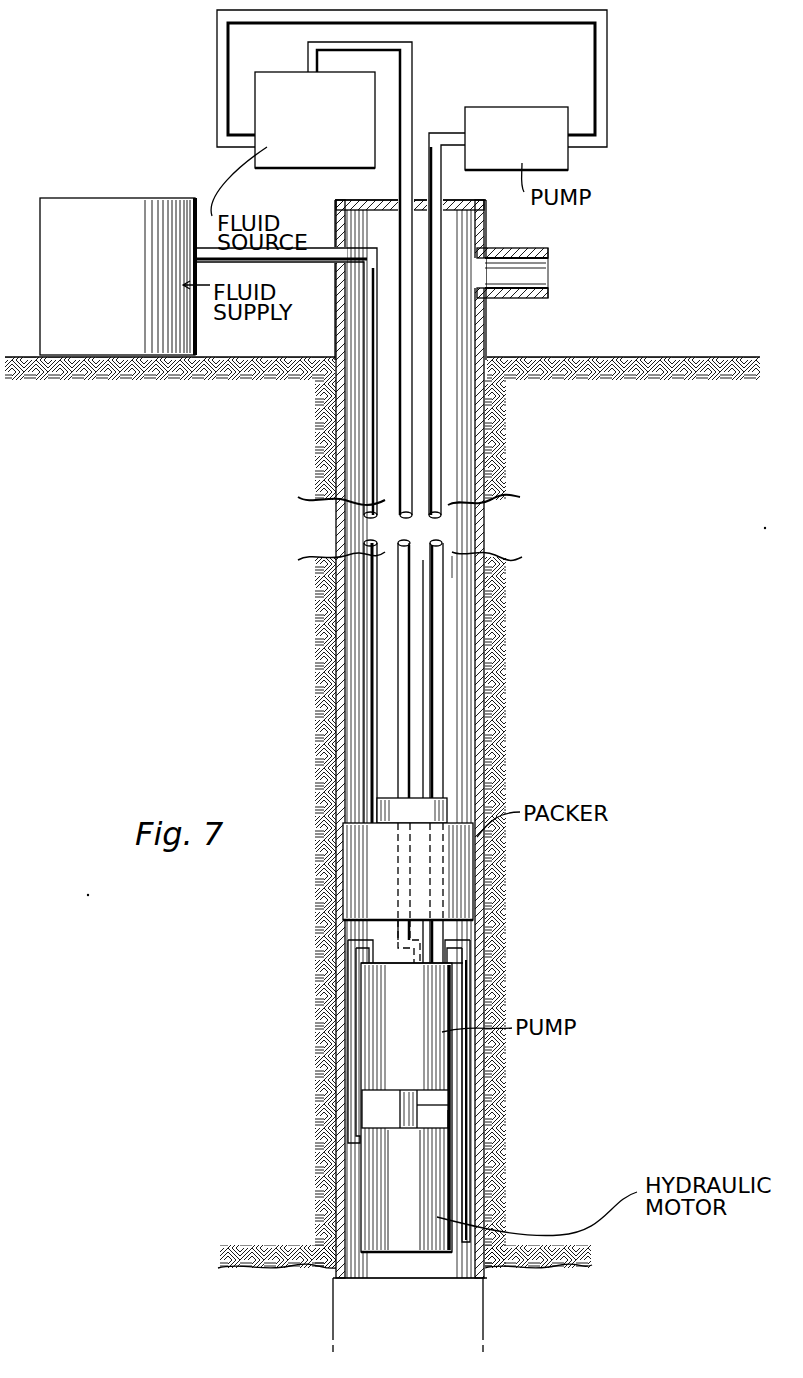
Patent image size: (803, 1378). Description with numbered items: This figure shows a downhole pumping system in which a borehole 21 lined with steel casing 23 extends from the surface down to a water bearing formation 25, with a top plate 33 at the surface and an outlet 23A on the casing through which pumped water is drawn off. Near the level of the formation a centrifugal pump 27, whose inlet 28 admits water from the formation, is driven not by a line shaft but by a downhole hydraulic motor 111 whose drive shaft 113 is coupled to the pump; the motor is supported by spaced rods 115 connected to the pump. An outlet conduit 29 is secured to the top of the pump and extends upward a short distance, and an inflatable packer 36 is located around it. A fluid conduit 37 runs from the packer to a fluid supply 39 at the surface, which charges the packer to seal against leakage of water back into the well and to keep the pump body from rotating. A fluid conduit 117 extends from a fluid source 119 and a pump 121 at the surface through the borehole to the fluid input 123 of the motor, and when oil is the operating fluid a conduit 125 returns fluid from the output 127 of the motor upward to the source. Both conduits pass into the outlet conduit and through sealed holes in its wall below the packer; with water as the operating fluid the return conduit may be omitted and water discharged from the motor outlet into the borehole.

The fluid source 119 is at (277, 103).
The pump 121 is at (527, 118).
The top plate 33 is at (462, 202).
The fluid supply 39 is at (124, 200).
The outlet 23A is at (513, 250).
The steel casing 23 is at (495, 460).
The borehole 21 is at (452, 578).
The fluid conduit 37 is at (367, 625).
The fluid conduit 117 is at (442, 625).
The conduit 125 is at (402, 730).
The outlet conduit 29 is at (413, 798).
The inflatable packer 36 is at (413, 863).
The inlet 28 is at (387, 1090).
The centrifugal pump 27 is at (408, 1062).
The drive shaft 113 is at (408, 1105).
The spaced rods 115 is at (448, 1118).
The output 127 is at (358, 1143).
The downhole hydraulic motor 111 is at (413, 1198).
The fluid input 123 is at (464, 1245).
The water bearing formation 25 is at (316, 1298).